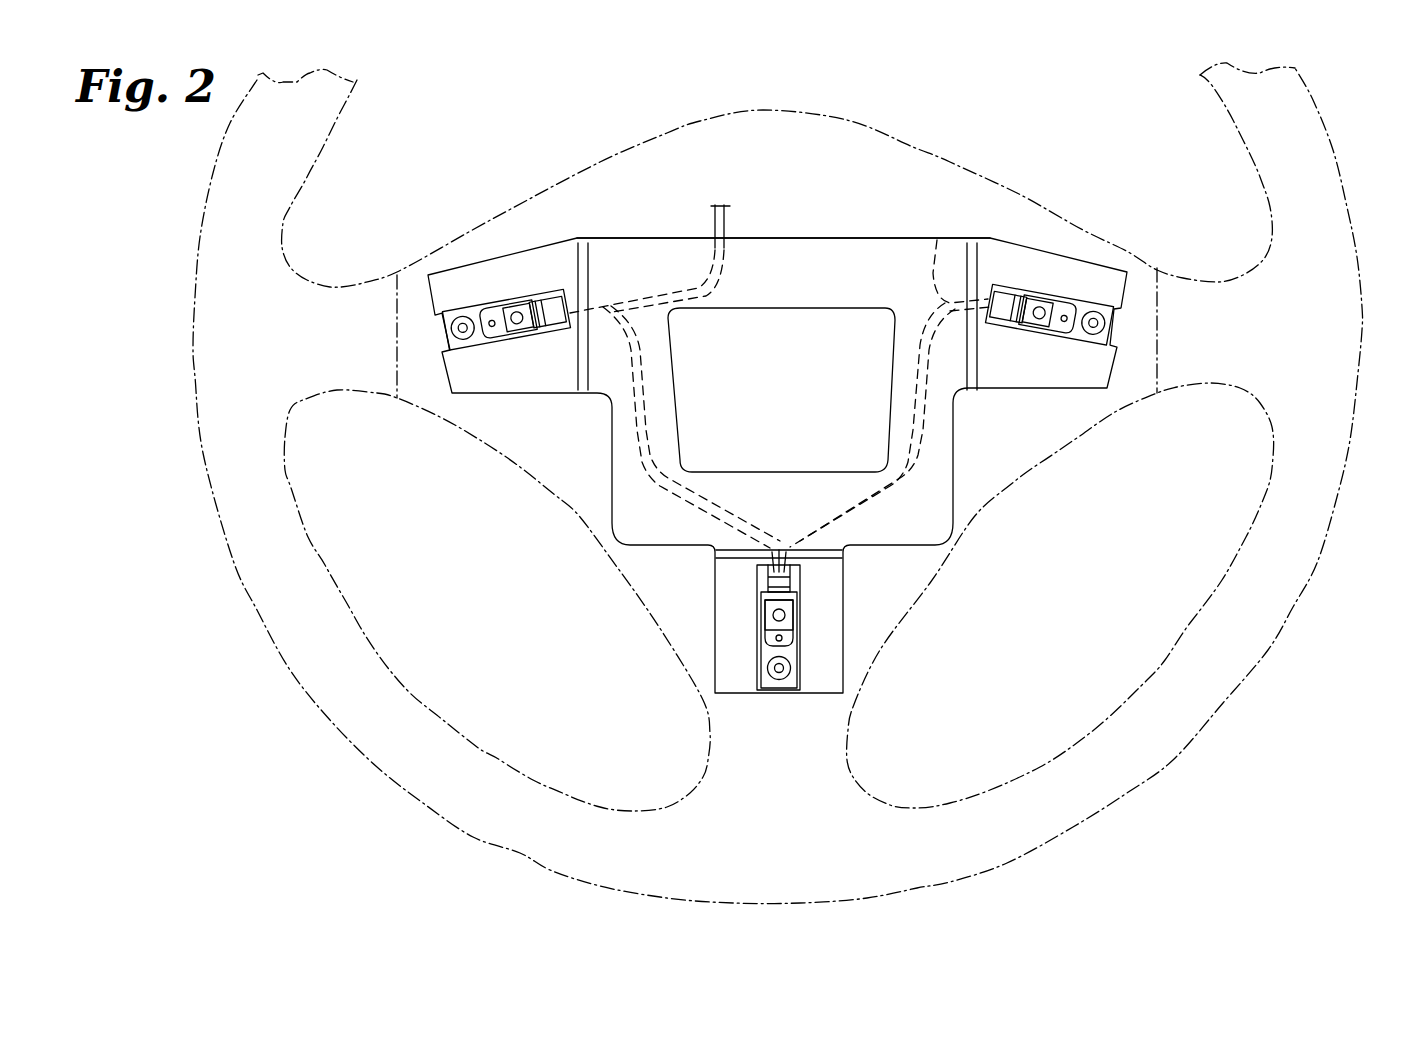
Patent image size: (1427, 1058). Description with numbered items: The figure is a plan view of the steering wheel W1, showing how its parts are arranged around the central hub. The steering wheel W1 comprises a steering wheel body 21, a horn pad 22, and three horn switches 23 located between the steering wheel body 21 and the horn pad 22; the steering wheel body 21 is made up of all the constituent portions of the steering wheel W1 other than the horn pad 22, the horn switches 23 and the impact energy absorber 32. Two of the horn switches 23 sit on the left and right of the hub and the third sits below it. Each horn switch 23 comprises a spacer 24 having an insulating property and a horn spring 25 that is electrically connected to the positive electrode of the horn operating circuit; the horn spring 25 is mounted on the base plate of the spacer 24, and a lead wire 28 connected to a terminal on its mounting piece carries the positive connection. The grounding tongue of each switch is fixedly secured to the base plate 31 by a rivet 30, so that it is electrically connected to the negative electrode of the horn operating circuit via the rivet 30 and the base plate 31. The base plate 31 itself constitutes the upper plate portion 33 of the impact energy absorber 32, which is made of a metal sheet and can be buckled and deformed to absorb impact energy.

The steering wheel W1 is at (1302, 66).
The steering wheel body 21 is at (586, 571).
The horn pad 22 is at (898, 152).
The horn switch 23 is at (512, 347).
The spacer 24 is at (465, 343).
The horn spring 25 is at (493, 308).
The lead wire 28 is at (728, 212).
The rivet 30 is at (517, 311).
The base plate 31 is at (627, 257).
The impact energy absorber 32 is at (822, 236).
The upper plate portion 33 is at (777, 316).